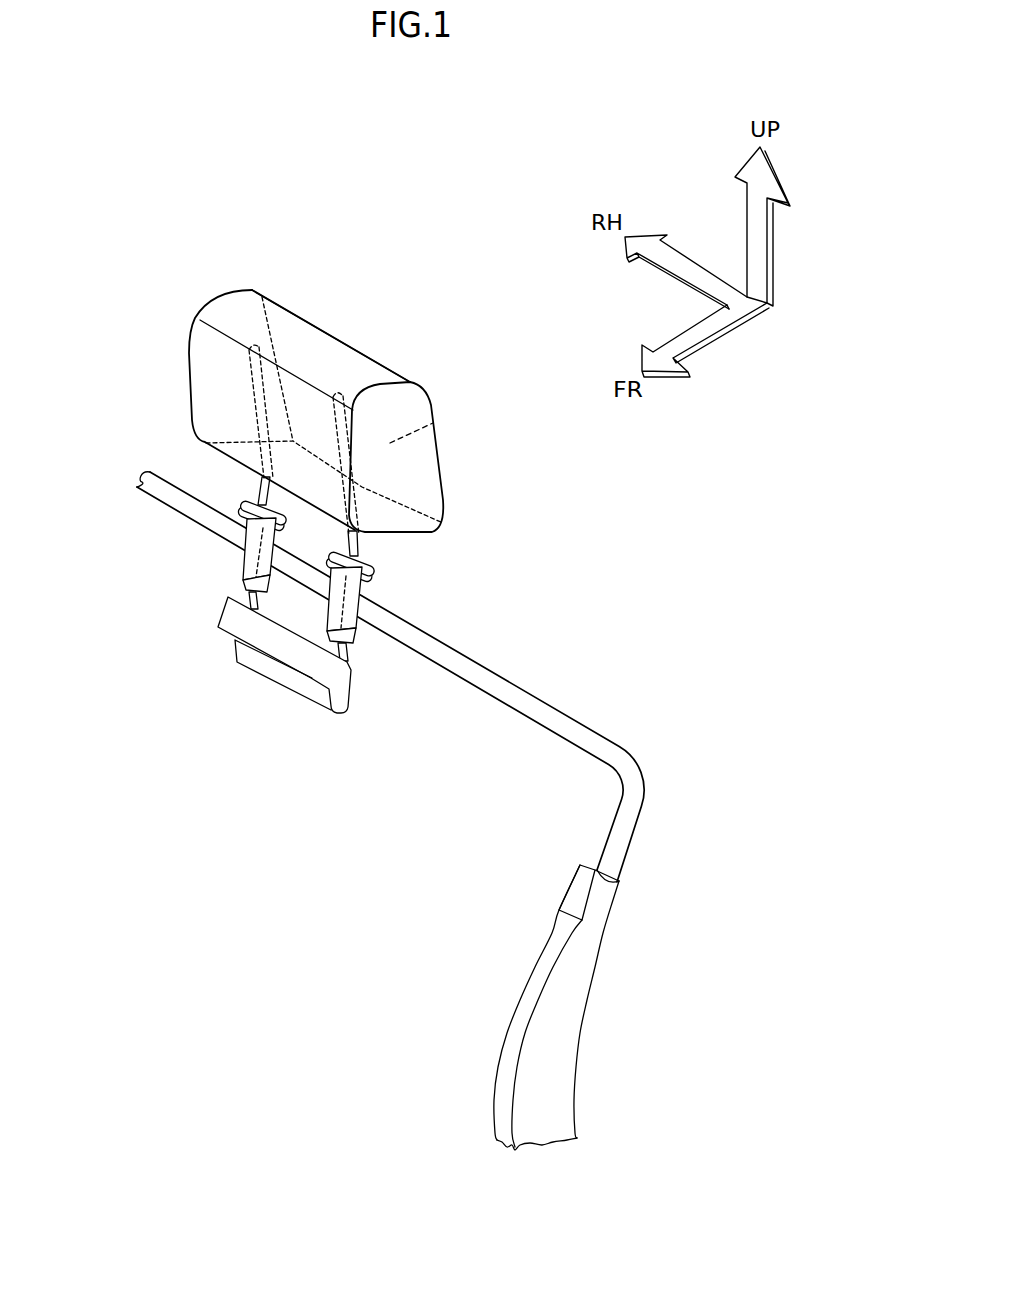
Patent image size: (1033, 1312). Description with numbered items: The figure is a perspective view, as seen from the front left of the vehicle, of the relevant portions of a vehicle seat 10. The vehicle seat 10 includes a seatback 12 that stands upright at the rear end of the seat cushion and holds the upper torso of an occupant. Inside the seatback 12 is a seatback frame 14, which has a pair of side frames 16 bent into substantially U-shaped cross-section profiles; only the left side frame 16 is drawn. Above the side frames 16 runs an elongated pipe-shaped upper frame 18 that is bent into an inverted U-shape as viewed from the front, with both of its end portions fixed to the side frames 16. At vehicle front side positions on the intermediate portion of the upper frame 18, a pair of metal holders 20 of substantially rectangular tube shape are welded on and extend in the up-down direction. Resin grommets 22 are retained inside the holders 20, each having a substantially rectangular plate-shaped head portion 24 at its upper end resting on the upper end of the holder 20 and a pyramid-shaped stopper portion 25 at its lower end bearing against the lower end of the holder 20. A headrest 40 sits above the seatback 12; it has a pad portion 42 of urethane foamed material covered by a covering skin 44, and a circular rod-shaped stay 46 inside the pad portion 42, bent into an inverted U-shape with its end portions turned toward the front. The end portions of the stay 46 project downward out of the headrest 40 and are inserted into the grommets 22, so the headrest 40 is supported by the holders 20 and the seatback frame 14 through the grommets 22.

The vehicle seat 10 is at (520, 276).
The seatback 12 is at (584, 590).
The seatback frame 14 is at (615, 928).
The side frame 16 is at (577, 1072).
The upper frame 18 is at (505, 678).
The holder 20 is at (245, 560).
The grommet 22 is at (250, 492).
The head portion 24 is at (245, 502).
The stopper portion 25 is at (242, 577).
The headrest 40 is at (371, 352).
The pad portion 42 is at (433, 423).
The covering skin 44 is at (298, 291).
The stay 46 is at (288, 525).